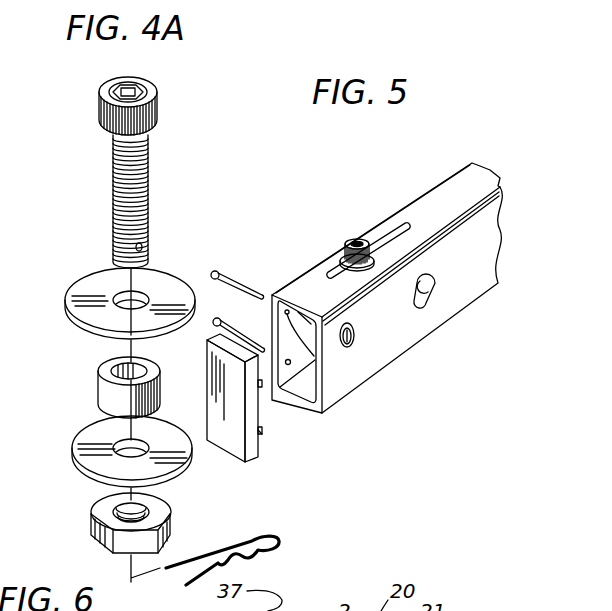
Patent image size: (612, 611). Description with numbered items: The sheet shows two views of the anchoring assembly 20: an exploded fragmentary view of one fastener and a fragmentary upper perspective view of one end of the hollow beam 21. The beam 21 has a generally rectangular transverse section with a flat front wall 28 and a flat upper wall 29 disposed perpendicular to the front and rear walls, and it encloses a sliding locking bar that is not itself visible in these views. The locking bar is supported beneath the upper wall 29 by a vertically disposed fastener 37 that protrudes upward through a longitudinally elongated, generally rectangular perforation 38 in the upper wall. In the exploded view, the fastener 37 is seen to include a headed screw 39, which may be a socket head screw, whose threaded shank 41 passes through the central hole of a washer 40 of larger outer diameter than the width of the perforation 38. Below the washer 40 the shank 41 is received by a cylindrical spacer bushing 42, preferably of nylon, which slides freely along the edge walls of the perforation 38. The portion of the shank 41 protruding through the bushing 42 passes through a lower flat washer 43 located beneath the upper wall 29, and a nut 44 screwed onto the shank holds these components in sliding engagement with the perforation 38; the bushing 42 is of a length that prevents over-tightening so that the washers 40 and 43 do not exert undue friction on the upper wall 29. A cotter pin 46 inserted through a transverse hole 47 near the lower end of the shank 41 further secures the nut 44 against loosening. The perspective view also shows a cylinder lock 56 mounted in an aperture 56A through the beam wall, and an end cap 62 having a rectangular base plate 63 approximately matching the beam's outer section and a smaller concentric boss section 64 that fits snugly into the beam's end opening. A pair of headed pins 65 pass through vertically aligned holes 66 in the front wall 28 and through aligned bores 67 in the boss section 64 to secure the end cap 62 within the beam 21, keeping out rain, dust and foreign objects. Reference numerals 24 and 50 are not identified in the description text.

In FIG. 5, the anchoring assembly 20 is at (351, 311).
In FIG. 5, the hollow beam 21 is at (385, 263).
In FIG. 4A, the fastener assembly 24 is at (27, 347).
In FIG. 5, the front wall 28 is at (268, 318).
In FIG. 5, the upper wall 29 is at (428, 207).
In FIG. 4A, the fastener 37 is at (133, 172).
In FIG. 5, the fastener 37 is at (353, 241).
In FIG. 5, the perforation 38 is at (385, 238).
In FIG. 4A, the headed screw 39 is at (112, 161).
In FIG. 4A, the washer 40 is at (86, 287).
In FIG. 4A, the threaded shank 41 is at (112, 208).
In FIG. 4A, the cylindrical spacer bushing 42 is at (98, 385).
In FIG. 4A, the lower flat washer 43 is at (78, 456).
In FIG. 4A, the nut 44 is at (177, 523).
In FIG. 4A, the cotter pin 46 is at (279, 541).
In FIG. 4A, the transverse hole 47 is at (143, 246).
In FIG. 4A, the mounting assembly 50 is at (0, 420).
In FIG. 5, the cylinder lock 56 is at (349, 346).
In FIG. 5, the aperture 56A is at (356, 333).
In FIG. 5, the end cap 62 is at (261, 422).
In FIG. 5, the base plate 63 is at (257, 453).
In FIG. 5, the boss section 64 is at (263, 441).
In FIG. 5, the headed pins 65 is at (248, 287).
In FIG. 5, the holes 66 is at (290, 362).
In FIG. 5, the bores 67 is at (264, 389).